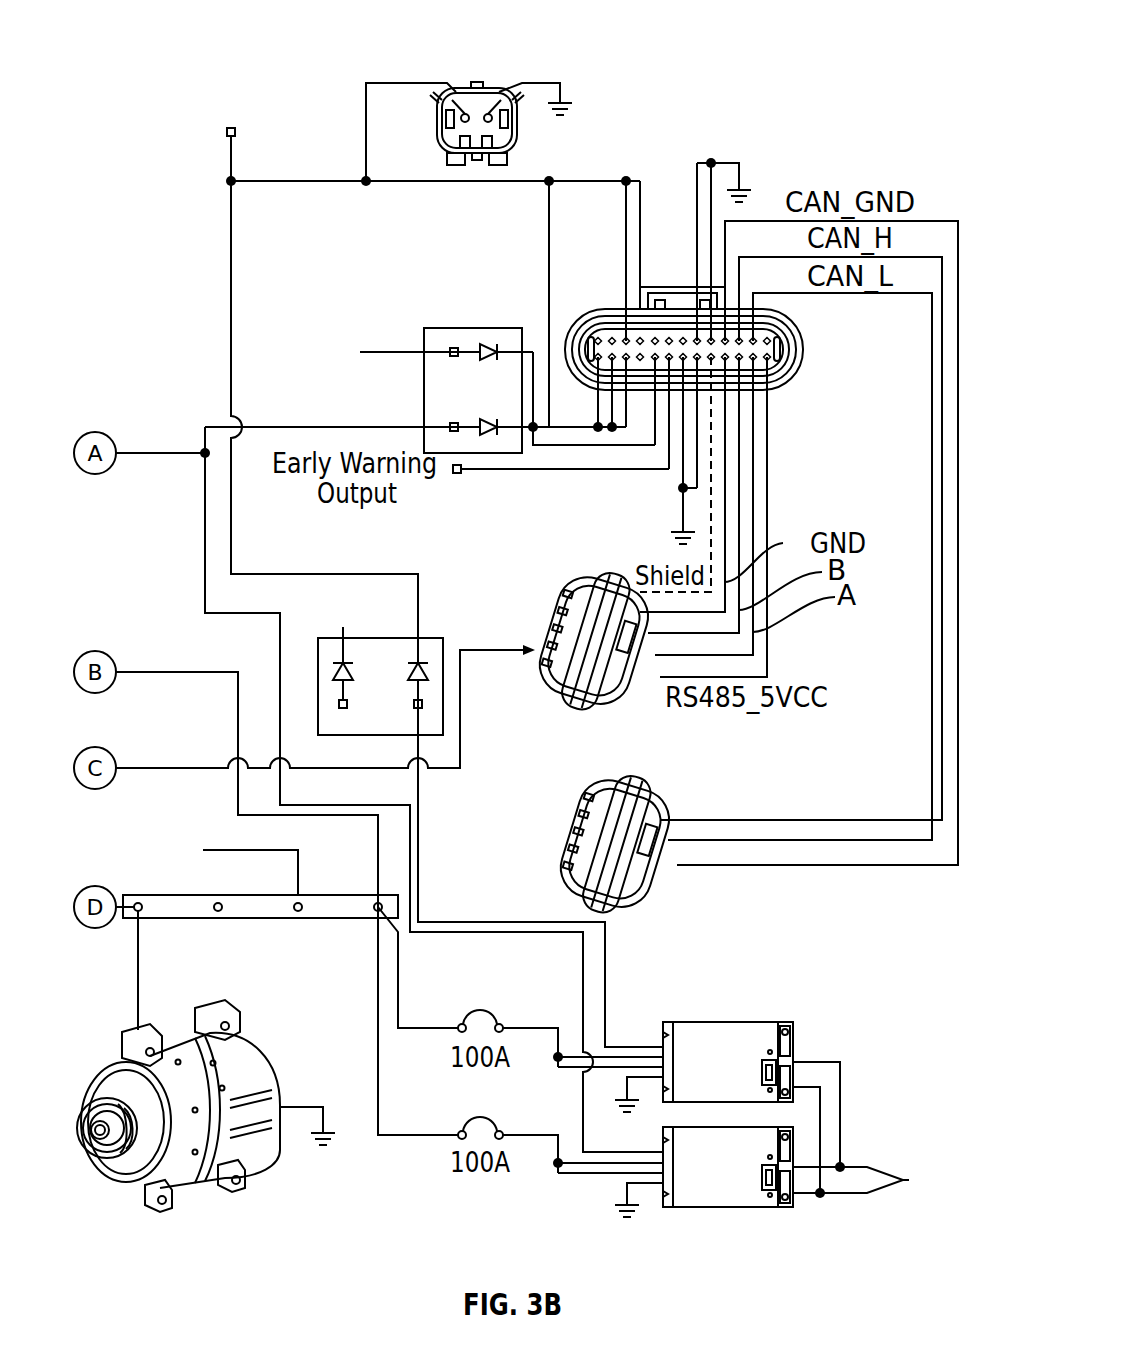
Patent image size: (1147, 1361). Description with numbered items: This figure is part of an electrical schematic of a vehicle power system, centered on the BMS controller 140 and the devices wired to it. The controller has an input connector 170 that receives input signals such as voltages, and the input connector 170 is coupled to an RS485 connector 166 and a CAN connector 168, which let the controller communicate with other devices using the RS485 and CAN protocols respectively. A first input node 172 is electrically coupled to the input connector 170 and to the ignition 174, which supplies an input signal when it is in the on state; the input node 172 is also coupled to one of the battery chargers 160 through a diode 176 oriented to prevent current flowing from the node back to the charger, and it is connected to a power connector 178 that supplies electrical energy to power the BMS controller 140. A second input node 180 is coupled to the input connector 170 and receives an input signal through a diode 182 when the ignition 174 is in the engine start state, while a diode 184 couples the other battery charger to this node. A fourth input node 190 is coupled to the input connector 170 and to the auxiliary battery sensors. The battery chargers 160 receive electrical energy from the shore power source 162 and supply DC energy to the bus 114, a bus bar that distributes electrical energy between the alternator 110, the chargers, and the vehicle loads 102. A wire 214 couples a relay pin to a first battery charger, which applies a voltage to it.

The BMS controller 140 is at (485, 30).
The input connector 170 is at (803, 352).
The input node 172 is at (237, 180).
The ignition 174 is at (238, 132).
The diode 176 is at (436, 638).
The power connector 178 is at (517, 125).
The input node 180 is at (542, 322).
The diode 182 is at (488, 346).
The diode 184 is at (495, 420).
The wire 214 is at (201, 580).
The RS485 connector 166 is at (592, 706).
The CAN connector 168 is at (677, 866).
The input node 190 is at (462, 748).
The vehicle loads 102 is at (208, 850).
The bus 114 is at (122, 919).
The alternator 110 is at (263, 1050).
The battery chargers 160 is at (795, 1032).
The shore power source 162 is at (886, 1130).